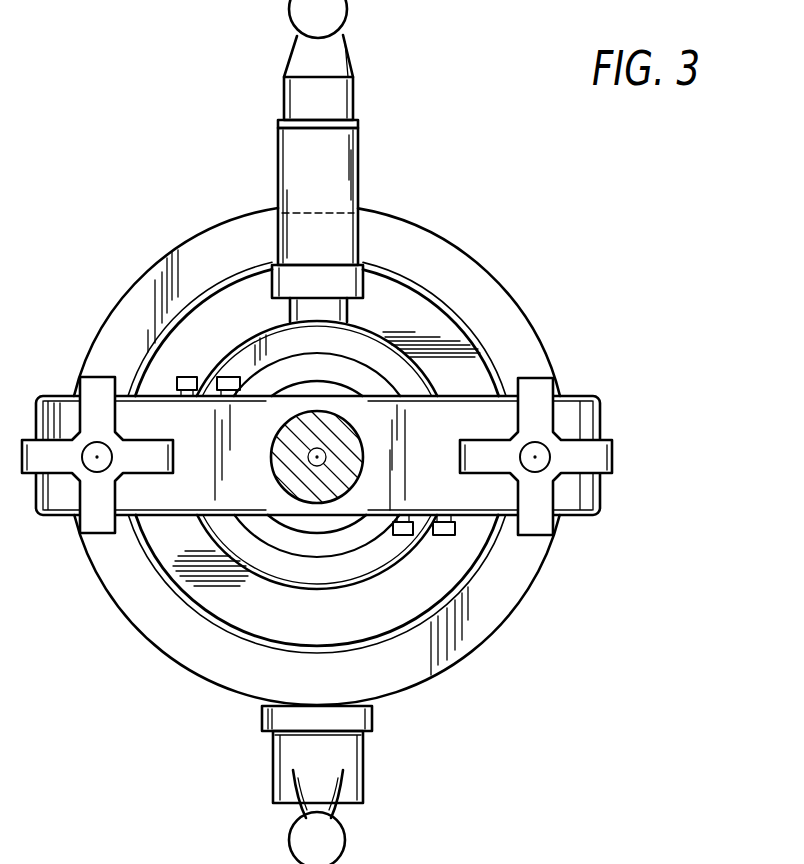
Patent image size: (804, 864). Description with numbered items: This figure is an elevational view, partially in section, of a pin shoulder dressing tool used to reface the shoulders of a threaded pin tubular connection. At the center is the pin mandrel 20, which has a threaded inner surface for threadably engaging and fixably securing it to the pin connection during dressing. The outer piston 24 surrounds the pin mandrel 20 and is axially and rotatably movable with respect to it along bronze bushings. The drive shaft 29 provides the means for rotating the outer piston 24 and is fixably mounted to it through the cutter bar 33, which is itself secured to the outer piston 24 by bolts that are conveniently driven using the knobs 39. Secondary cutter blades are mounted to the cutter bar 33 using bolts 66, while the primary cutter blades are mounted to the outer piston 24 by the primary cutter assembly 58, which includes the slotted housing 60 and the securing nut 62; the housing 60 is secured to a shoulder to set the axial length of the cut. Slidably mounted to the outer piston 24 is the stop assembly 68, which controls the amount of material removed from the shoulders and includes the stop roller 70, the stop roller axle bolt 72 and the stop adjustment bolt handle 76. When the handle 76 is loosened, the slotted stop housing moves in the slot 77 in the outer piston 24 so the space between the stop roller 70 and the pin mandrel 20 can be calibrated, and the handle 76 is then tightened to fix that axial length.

The pin mandrel 20 is at (192, 348).
The outer piston 24 is at (115, 572).
The drive shaft 29 is at (297, 478).
The cutter bar 33 is at (577, 415).
The knobs 39 is at (537, 388).
The primary cutter assembly 58 is at (309, 785).
The housing 60 is at (360, 717).
The securing nut 62 is at (355, 782).
The bolts 66 is at (443, 537).
The stop assembly 68 is at (357, 161).
The stop roller 70 is at (352, 284).
The stop roller axle bolt 72 is at (272, 300).
The stop adjustment bolt handle 76 is at (304, 46).
The slot 77 is at (329, 211).